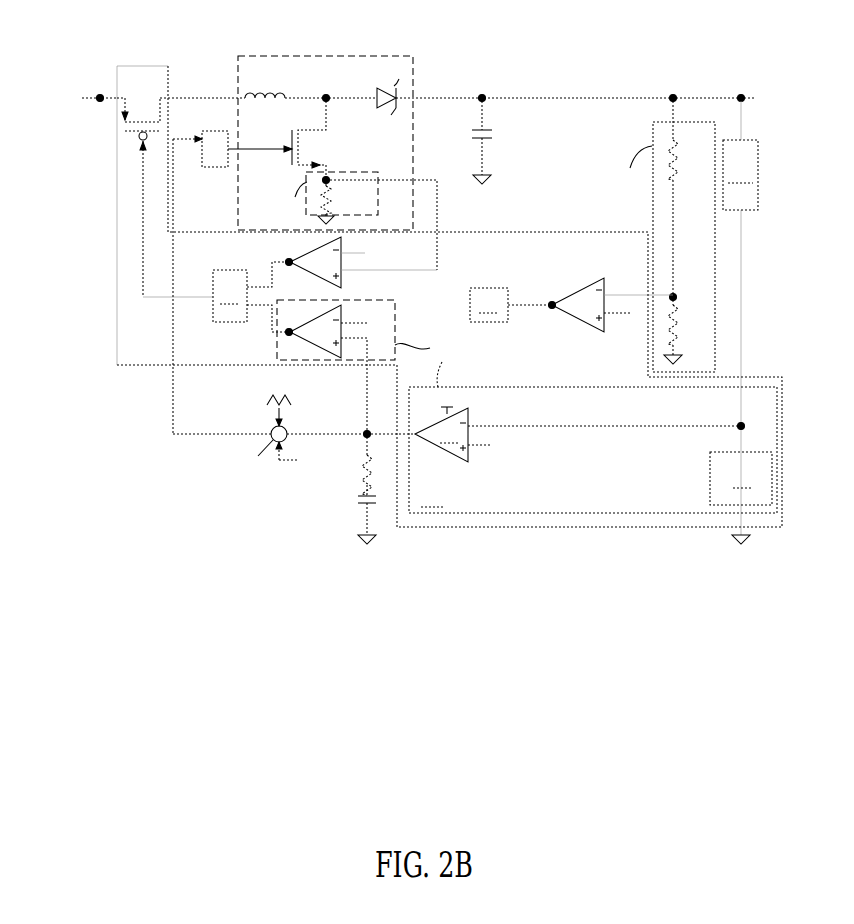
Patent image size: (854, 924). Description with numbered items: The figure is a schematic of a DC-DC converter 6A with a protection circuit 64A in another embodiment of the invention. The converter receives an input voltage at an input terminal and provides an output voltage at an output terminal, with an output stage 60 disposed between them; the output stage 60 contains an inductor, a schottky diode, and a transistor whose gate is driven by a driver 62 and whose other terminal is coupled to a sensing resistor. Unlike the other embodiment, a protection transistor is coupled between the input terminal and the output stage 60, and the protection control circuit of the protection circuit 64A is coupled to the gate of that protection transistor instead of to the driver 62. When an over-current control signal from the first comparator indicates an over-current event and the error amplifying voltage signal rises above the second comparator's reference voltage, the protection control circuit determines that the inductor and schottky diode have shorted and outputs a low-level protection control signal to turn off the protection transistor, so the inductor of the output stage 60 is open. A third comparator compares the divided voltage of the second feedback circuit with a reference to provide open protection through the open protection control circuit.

The DC-DC converter 6A is at (103, 21).
The output stage 60 is at (277, 56).
The driver 62 is at (223, 157).
The protection circuit 64A is at (145, 360).